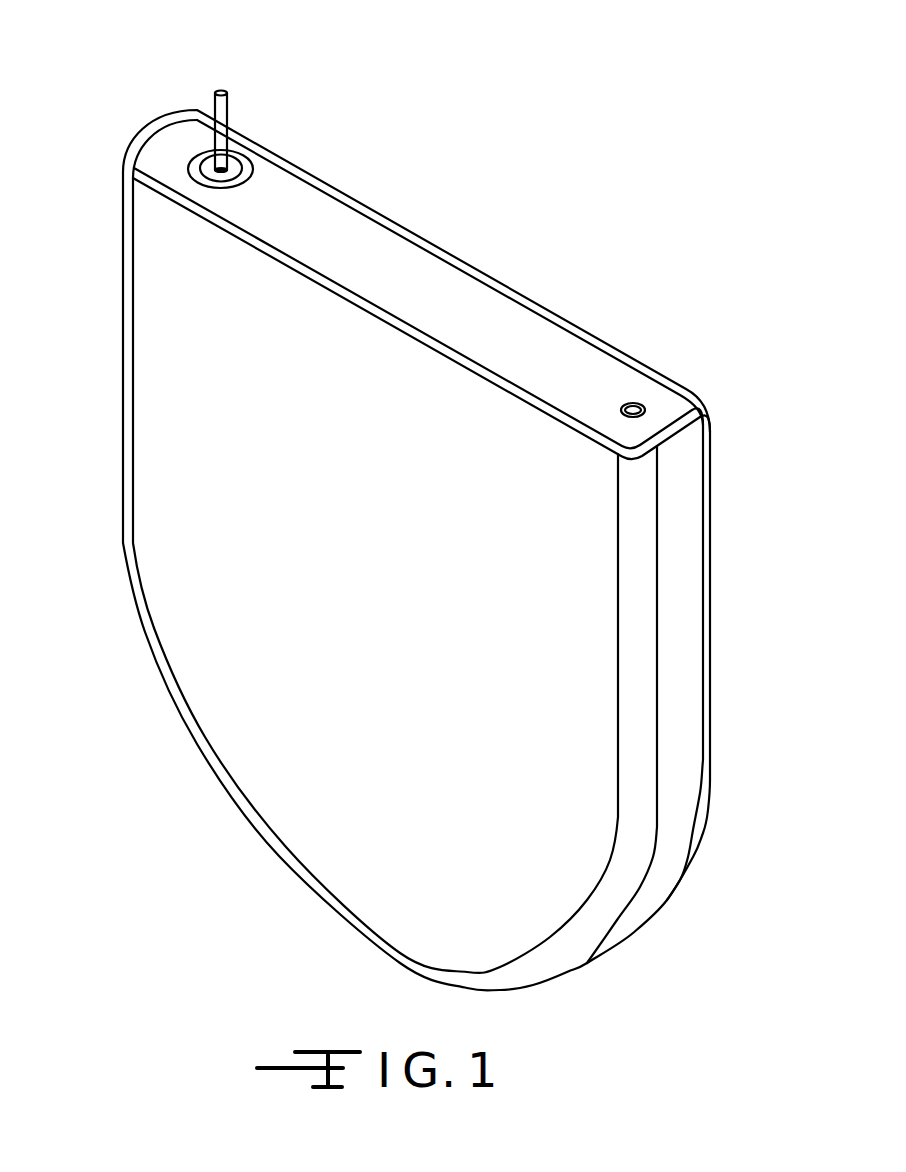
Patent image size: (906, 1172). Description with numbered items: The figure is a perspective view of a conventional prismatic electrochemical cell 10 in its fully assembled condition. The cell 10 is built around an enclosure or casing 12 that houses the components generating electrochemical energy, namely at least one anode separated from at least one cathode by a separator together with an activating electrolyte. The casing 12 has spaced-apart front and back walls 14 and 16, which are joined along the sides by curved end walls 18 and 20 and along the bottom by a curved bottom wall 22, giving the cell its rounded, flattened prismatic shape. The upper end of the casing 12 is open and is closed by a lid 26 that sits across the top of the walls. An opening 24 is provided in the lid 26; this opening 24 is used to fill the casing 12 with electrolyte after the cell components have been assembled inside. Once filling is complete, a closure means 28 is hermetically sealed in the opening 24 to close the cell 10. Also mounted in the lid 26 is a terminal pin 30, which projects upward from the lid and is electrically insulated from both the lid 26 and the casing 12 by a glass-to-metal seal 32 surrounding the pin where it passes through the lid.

The electrochemical cell 10 is at (537, 252).
The casing 12 is at (188, 350).
The front wall 14 is at (294, 764).
The back wall 16 is at (710, 493).
The curved end wall 18 is at (683, 646).
The curved end wall 20 is at (123, 253).
The curved bottom wall 22 is at (326, 919).
The opening 24 is at (645, 402).
The lid 26 is at (380, 260).
The closure means 28 is at (631, 405).
The terminal pin 30 is at (229, 102).
The glass-to-metal seal 32 is at (207, 168).